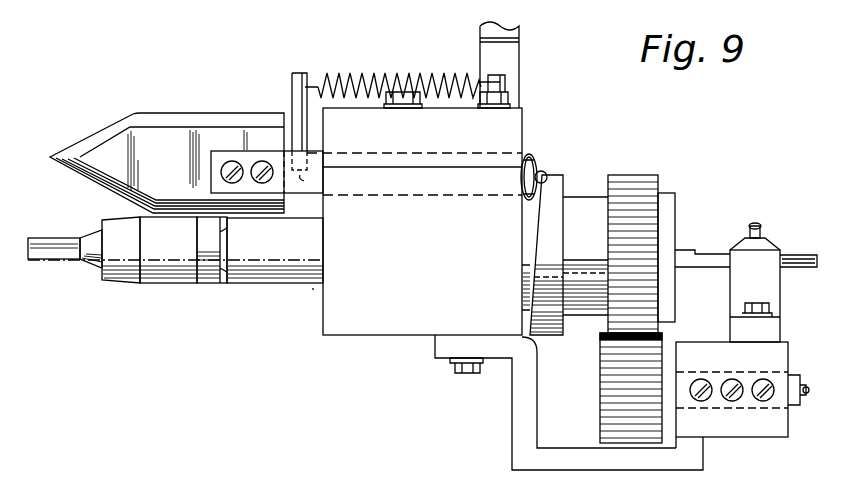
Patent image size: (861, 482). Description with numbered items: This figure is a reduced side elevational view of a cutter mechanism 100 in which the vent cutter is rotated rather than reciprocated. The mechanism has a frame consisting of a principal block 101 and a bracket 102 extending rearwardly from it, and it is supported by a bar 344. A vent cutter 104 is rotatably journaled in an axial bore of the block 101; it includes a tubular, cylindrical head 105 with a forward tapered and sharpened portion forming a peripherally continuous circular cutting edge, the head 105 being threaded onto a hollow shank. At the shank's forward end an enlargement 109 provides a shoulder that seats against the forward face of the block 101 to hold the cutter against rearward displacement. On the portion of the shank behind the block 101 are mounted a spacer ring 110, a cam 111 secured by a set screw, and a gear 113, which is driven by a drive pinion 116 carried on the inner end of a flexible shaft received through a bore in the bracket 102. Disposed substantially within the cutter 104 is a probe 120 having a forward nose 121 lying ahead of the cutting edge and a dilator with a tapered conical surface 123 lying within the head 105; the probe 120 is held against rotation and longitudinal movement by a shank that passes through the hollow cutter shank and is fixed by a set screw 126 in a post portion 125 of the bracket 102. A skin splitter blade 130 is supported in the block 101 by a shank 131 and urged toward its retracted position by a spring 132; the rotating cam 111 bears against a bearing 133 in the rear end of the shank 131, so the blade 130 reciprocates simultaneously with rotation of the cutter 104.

The cutter mechanism 100 is at (293, 297).
The principal block 101 is at (365, 327).
The bracket 102 is at (760, 428).
The vent cutter 104 is at (312, 298).
The head 105 is at (180, 259).
The enlargement 109 is at (243, 268).
The spacer ring 110 is at (540, 212).
The cam 111 is at (555, 320).
The gear 113 is at (630, 195).
The drive pinion 116 is at (610, 392).
The probe 120 is at (690, 241).
The nose 121 is at (62, 245).
The tapered conical surface 123 is at (93, 259).
The post portion 125 is at (752, 279).
The set screw 126 is at (760, 226).
The skin splitter blade 130 is at (182, 142).
The shank 131 is at (533, 153).
The spring 132 is at (437, 47).
The bearing 133 is at (542, 171).
The bar 344 is at (510, 60).